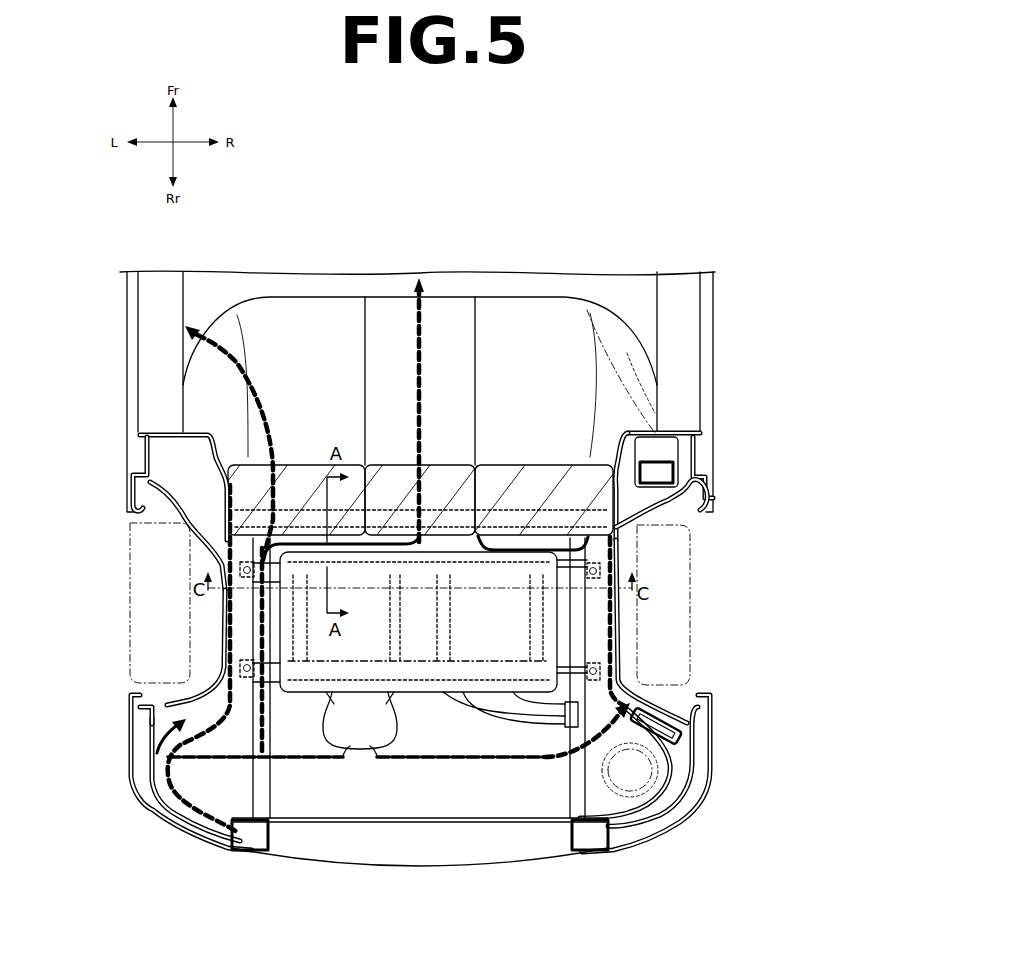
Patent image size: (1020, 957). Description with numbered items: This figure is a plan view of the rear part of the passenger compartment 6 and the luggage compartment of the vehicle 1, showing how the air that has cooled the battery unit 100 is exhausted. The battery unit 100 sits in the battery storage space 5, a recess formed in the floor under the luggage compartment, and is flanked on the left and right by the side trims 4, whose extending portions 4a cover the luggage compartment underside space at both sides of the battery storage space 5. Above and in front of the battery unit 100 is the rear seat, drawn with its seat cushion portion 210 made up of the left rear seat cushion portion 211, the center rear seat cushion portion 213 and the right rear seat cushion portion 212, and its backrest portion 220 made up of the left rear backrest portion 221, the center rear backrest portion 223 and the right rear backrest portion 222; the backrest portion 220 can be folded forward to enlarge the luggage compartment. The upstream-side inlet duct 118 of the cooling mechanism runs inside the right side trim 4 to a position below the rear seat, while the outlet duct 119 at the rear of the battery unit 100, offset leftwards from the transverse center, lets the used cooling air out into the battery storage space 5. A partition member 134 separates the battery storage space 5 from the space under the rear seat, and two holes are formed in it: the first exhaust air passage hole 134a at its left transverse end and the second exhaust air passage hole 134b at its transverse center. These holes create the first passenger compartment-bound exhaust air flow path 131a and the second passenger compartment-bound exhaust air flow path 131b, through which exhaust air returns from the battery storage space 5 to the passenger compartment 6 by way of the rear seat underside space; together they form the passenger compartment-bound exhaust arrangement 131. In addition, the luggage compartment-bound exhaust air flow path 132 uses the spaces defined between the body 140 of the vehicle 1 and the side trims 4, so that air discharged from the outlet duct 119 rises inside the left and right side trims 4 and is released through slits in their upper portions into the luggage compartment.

The vehicle 1 is at (660, 218).
The side trim 4 is at (213, 714).
The extending portion 4a is at (240, 775).
The battery storage space 5 is at (498, 740).
The passenger compartment 6 is at (420, 337).
The battery unit 100 is at (433, 700).
The upstream-side inlet duct 118 is at (660, 446).
The outlet duct 119 is at (360, 742).
The insulator 131 is at (352, 555).
The first passenger compartment-bound exhaust air flow path 131a is at (236, 352).
The second passenger compartment-bound exhaust air flow path 131b is at (420, 347).
The luggage compartment-bound exhaust air flow path 132 is at (160, 768).
The partition member 134 is at (392, 468).
The first exhaust air passage hole 134a is at (183, 518).
The second exhaust air passage hole 134b is at (420, 517).
The body 140 is at (150, 710).
The seat cushion portion 210 is at (420, 337).
The left rear seat cushion portion 211 is at (300, 317).
The right rear seat cushion portion 212 is at (557, 333).
The center rear seat cushion portion 213 is at (445, 317).
The backrest portion 220 is at (427, 458).
The left rear backrest portion 221 is at (305, 475).
The right rear backrest portion 222 is at (543, 475).
The center rear backrest portion 223 is at (447, 475).